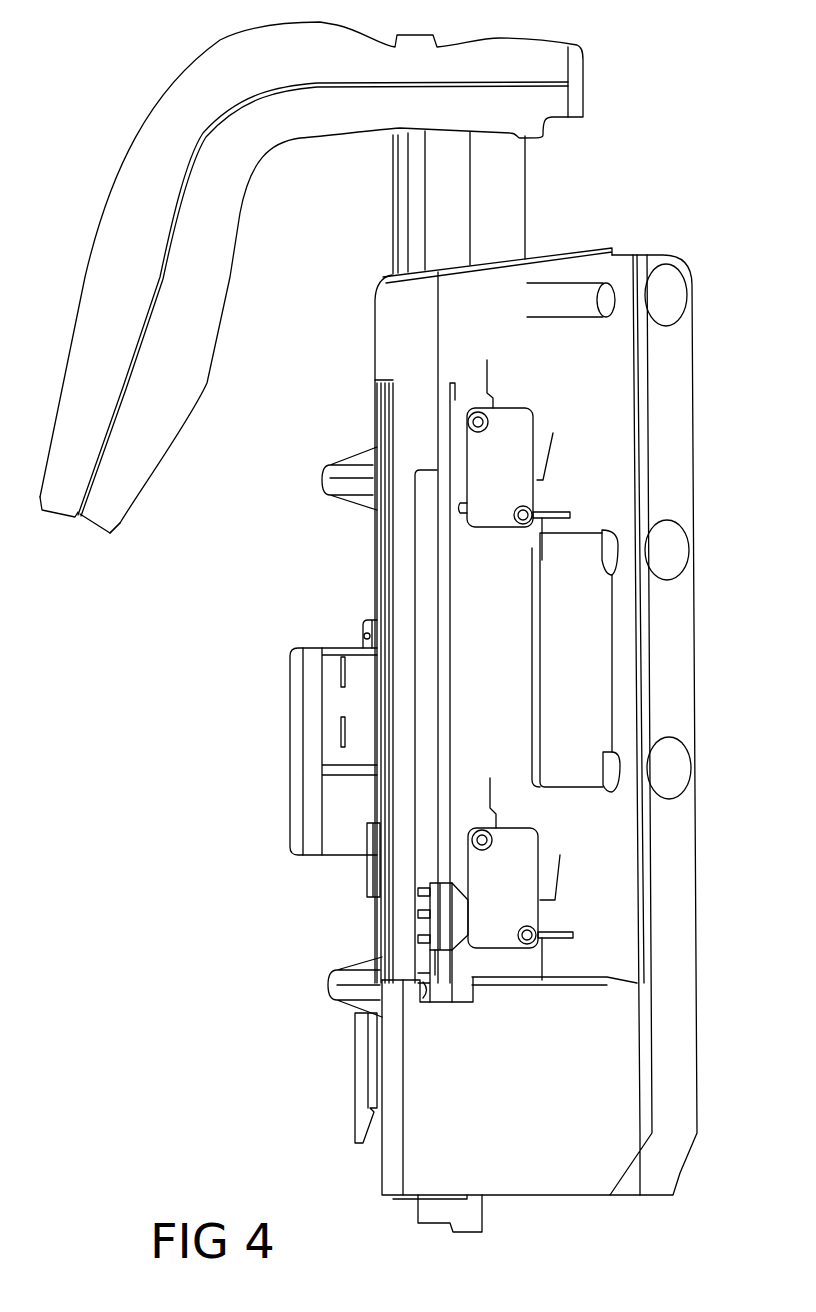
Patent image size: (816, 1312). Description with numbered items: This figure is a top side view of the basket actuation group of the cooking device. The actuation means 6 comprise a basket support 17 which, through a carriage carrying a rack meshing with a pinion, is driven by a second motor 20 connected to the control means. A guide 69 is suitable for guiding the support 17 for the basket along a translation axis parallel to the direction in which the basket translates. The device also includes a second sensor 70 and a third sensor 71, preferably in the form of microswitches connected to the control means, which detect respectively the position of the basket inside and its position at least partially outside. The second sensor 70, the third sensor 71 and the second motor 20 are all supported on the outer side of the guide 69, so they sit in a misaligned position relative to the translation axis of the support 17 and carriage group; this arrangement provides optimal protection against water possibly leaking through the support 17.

The actuation means 6 is at (180, 670).
The basket support 17 is at (358, 200).
The guide 69 is at (347, 337).
The second motor 20 is at (300, 793).
The second sensor 70 is at (470, 885).
The third sensor 71 is at (488, 463).